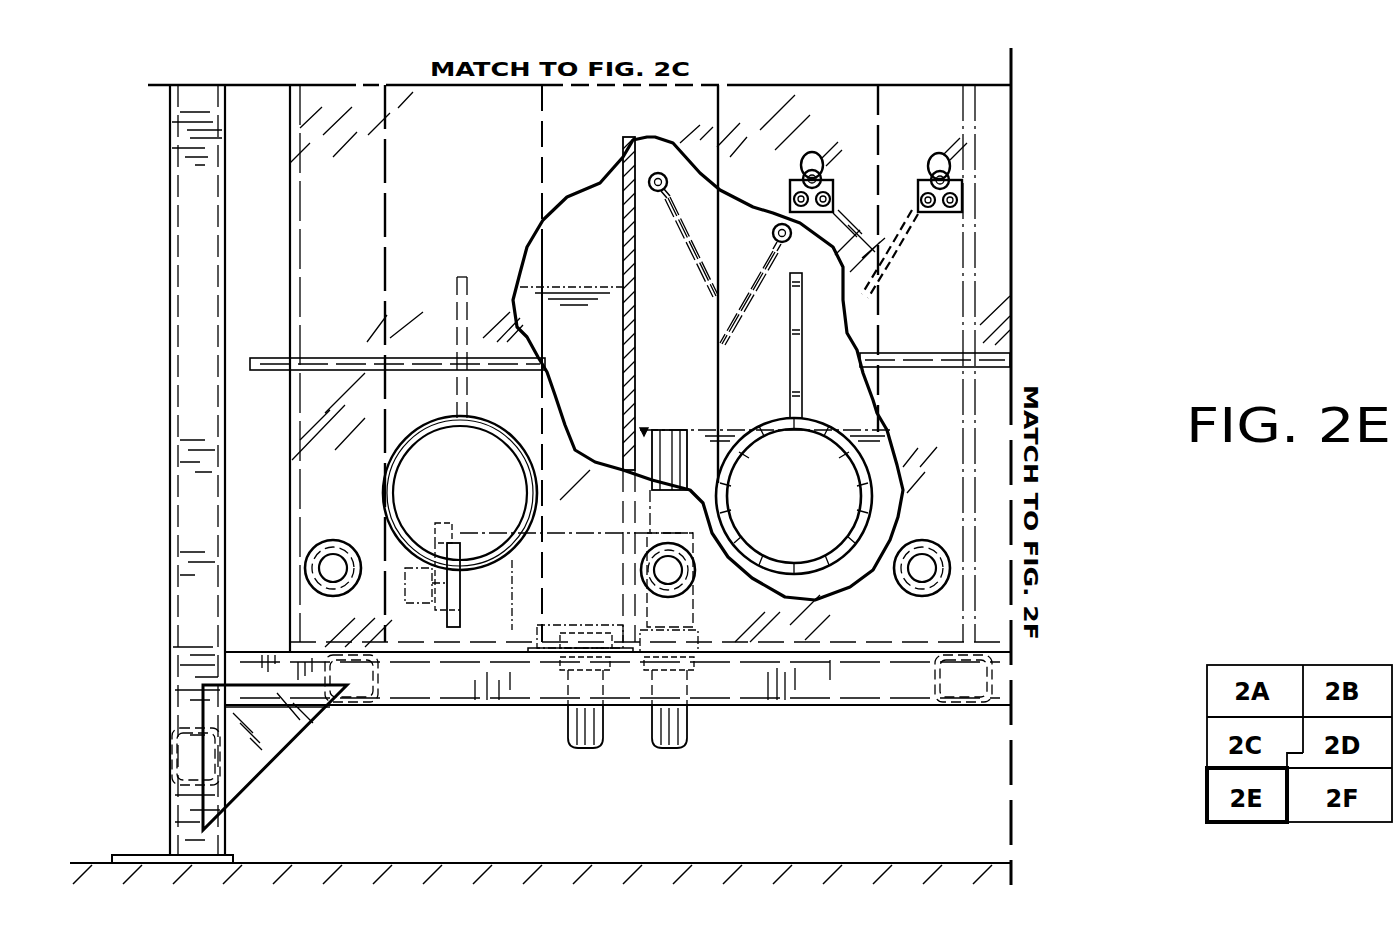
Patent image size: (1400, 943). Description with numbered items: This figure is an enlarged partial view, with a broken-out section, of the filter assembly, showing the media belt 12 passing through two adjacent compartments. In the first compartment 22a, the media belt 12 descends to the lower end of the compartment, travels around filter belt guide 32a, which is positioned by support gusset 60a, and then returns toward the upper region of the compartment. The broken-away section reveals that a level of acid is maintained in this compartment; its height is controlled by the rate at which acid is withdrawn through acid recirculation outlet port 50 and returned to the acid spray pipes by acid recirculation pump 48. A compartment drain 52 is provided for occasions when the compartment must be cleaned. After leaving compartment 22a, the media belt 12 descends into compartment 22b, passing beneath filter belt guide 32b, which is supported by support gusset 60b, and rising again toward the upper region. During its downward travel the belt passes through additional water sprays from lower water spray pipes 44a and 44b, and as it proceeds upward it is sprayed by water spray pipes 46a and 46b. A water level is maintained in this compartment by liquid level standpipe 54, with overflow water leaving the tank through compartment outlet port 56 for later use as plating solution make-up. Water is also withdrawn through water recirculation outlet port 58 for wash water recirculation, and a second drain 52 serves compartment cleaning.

The media belt 12 is at (540, 170).
The compartment 22a is at (345, 268).
The compartment 22b is at (913, 264).
The filter belt guide 32a is at (520, 513).
The filter belt guide 32b is at (802, 557).
The lower water spray pipe 44a is at (660, 167).
The lower water spray pipe 44b is at (780, 222).
The water spray pipe 46a is at (813, 157).
The water spray pipe 46b is at (930, 157).
The acid recirculation pump 48 is at (483, 597).
The acid recirculation outlet port 50 is at (355, 556).
The compartment drain 52 is at (578, 735).
The liquid level standpipe 54 is at (691, 451).
The compartment outlet port 56 is at (695, 575).
The water recirculation outlet port 58 is at (918, 544).
The support gusset 60a is at (448, 310).
The support gusset 60b is at (790, 308).